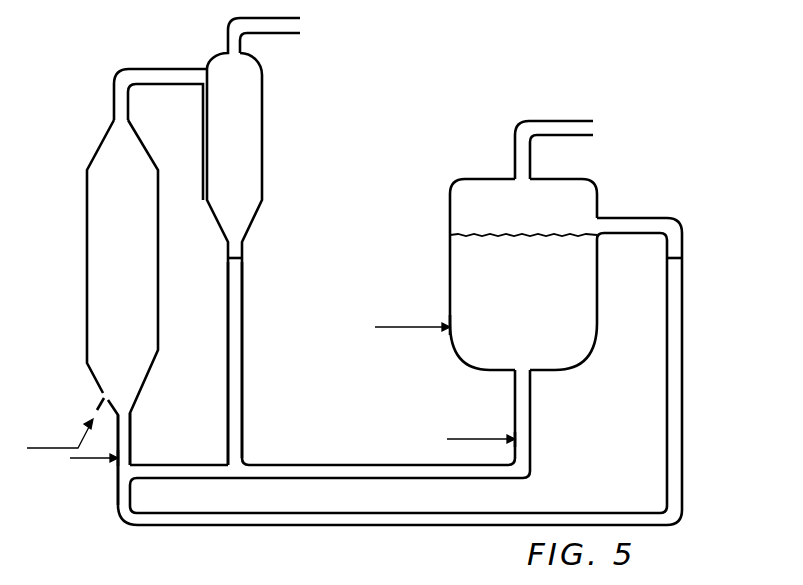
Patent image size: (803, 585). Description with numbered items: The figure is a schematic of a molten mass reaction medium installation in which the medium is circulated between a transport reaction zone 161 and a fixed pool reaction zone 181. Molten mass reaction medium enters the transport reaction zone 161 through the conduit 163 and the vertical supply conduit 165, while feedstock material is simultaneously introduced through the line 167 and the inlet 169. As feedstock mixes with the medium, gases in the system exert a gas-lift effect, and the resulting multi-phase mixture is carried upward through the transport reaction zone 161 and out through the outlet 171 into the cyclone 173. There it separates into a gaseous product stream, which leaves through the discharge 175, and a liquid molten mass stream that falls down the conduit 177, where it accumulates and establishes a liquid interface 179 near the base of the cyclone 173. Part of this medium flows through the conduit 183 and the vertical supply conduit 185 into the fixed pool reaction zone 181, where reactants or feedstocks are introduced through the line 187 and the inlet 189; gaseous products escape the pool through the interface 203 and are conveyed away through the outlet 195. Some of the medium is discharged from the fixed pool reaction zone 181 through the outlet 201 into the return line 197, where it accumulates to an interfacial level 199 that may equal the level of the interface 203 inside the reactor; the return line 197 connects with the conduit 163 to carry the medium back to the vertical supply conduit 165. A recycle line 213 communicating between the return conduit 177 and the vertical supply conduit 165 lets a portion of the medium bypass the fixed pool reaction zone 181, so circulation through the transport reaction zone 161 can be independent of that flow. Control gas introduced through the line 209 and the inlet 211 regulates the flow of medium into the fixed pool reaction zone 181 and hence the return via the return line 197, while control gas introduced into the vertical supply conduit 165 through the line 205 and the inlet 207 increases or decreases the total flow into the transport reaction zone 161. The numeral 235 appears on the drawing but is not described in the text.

The transport reaction zone 161 is at (87, 262).
The conduit 163 is at (350, 523).
The vertical supply conduit 165 is at (130, 455).
The line 167 is at (52, 448).
The inlet 169 is at (104, 392).
The outlet 171 is at (148, 76).
The cyclone 173 is at (250, 150).
The discharge 175 is at (236, 29).
The conduit 177 is at (243, 362).
The liquid interface 179 is at (243, 253).
The fixed pool reaction zone 181 is at (450, 268).
The conduit 183 is at (333, 465).
The vertical supply conduit 185 is at (526, 426).
The line 187 is at (410, 330).
The inlet 189 is at (449, 318).
The outlet 195 is at (548, 123).
The return line 197 is at (676, 392).
The interfacial level 199 is at (672, 256).
The outlet 201 is at (599, 225).
The interface 203 is at (545, 216).
The line 205 is at (85, 458).
The inlet 207 is at (118, 463).
The line 209 is at (447, 439).
The inlet 211 is at (513, 440).
The recycle line 213 is at (180, 474).
The element (off sheet) 235 is at (187, 579).